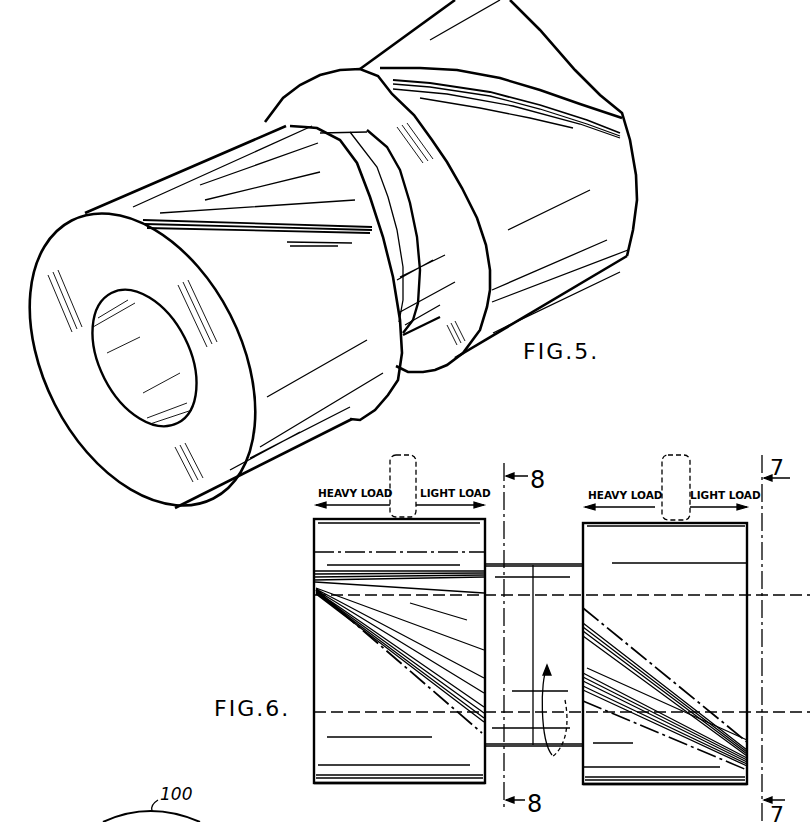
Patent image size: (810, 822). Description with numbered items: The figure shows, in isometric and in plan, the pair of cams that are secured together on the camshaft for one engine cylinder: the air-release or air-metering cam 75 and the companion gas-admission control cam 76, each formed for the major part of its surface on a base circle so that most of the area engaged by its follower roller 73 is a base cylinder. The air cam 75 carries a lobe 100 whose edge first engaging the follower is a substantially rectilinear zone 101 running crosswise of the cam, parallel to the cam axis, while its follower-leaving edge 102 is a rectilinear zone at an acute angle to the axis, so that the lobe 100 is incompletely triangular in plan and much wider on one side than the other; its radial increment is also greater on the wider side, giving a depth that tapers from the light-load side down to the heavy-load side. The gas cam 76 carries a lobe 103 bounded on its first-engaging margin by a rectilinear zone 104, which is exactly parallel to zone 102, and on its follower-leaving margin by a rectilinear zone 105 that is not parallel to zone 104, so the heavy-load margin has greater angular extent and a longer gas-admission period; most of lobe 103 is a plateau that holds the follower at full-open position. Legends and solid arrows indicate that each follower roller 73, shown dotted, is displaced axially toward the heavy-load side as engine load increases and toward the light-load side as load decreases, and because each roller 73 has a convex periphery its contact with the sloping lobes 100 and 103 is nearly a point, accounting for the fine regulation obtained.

In FIG. 5, the lobe 100 is at (201, 328).
In FIG. 6, the lobe 100 is at (376, 664).
In FIG. 6, the rectilinear zone 101 is at (345, 552).
In FIG. 6, the follower-leaving edge 102 is at (397, 672).
In FIG. 5, the lobe 103 is at (473, 186).
In FIG. 6, the lobe 103 is at (665, 669).
In FIG. 6, the rectilinear zone 104 is at (657, 667).
In FIG. 6, the rectilinear zone 105 is at (650, 733).
In FIG. 6, the follower roller 73 is at (416, 462).
In FIG. 5, the air-release cam 75 is at (264, 470).
In FIG. 6, the air-release cam 75 is at (357, 775).
In FIG. 5, the gas-admission control cam 76 is at (620, 232).
In FIG. 6, the gas-admission control cam 76 is at (683, 780).